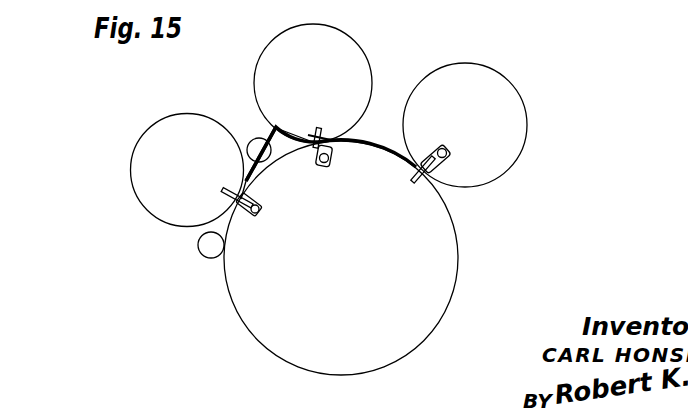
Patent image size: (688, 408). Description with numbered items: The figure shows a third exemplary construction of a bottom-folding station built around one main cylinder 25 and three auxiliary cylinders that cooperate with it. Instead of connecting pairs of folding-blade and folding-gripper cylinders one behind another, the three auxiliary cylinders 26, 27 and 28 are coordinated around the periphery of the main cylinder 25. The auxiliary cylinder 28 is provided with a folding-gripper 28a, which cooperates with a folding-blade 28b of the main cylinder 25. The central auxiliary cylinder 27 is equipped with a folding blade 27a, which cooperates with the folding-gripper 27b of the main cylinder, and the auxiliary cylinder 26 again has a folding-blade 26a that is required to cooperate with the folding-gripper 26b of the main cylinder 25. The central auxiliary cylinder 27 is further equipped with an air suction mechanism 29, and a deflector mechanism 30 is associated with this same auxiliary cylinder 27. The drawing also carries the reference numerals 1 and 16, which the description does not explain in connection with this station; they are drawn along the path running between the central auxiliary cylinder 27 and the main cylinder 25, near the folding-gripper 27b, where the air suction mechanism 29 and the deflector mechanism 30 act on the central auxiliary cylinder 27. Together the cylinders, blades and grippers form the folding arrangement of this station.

The tape or thread 1 is at (376, 145).
The thread 16 is at (275, 122).
The main cylinder 25 is at (408, 340).
The auxiliary cylinder 26 is at (143, 172).
The folding-blade 26a is at (238, 197).
The folding-gripper 26b is at (241, 200).
The auxiliary cylinder 27 is at (346, 37).
The folding blade 27a is at (320, 129).
The folding-gripper 27b is at (332, 149).
The auxiliary cylinder 28 is at (503, 103).
The folding-gripper 28a is at (447, 156).
The folding-blade 28b is at (414, 181).
The air suction mechanism 29 is at (276, 124).
The deflector mechanism 30 is at (256, 140).